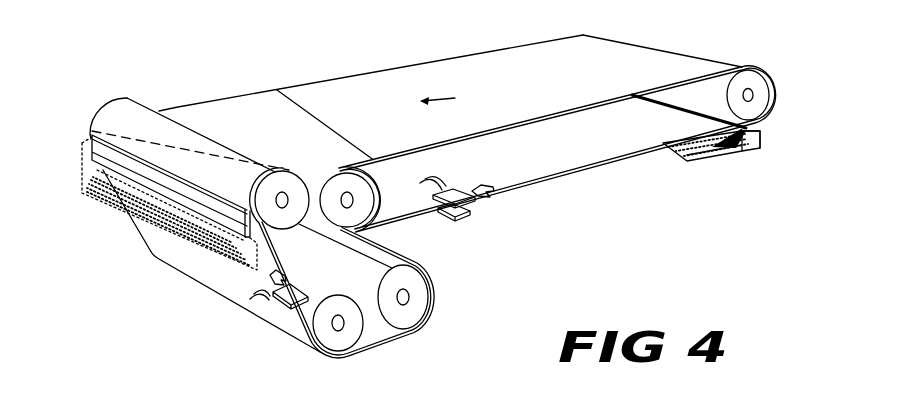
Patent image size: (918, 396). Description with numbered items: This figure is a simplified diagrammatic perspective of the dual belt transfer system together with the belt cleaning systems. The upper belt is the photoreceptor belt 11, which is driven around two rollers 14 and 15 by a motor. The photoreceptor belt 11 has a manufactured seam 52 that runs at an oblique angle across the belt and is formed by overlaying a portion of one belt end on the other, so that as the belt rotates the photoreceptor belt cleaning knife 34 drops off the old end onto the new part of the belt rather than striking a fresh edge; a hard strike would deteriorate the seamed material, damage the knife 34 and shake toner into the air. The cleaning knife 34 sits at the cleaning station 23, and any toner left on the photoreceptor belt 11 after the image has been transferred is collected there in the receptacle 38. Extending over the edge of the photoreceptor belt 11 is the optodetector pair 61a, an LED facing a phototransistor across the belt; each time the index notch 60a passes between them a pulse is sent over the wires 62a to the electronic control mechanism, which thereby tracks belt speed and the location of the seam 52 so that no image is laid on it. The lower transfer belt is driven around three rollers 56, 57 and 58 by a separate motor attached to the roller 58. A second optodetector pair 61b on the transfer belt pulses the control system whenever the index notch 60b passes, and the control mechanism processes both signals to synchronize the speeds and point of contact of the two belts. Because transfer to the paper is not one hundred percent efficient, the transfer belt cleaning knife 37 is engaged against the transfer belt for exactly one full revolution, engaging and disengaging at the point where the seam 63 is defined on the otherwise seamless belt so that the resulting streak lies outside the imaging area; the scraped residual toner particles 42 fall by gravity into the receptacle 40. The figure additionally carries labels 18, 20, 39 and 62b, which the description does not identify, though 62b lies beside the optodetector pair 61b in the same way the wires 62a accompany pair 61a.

The photoreceptor belt 11 is at (454, 58).
The roller 14 is at (759, 84).
The roller 15 is at (360, 203).
The direction of travel arrow 18 is at (450, 98).
The lower belt 20 is at (215, 277).
The cleaning station 23 is at (742, 170).
The photoreceptor belt cleaning knife 34 is at (705, 153).
The transfer belt cleaning knife 37 is at (93, 134).
The receptacle 38 is at (676, 157).
The tray end wall 39 is at (761, 141).
The receptacle 40 is at (111, 206).
The removed residual toner particles 42 is at (88, 186).
The seam 52 is at (348, 133).
The roller 56 is at (421, 295).
The roller 57 is at (343, 343).
The roller 58 is at (288, 176).
The index notch 60a is at (490, 199).
The optodetector pair 61a is at (456, 228).
The wires 62a is at (421, 197).
The index notch 60b is at (288, 274).
The optodetector pair 61b is at (312, 291).
The gripper spring 62b is at (257, 303).
The seam 63 is at (195, 147).